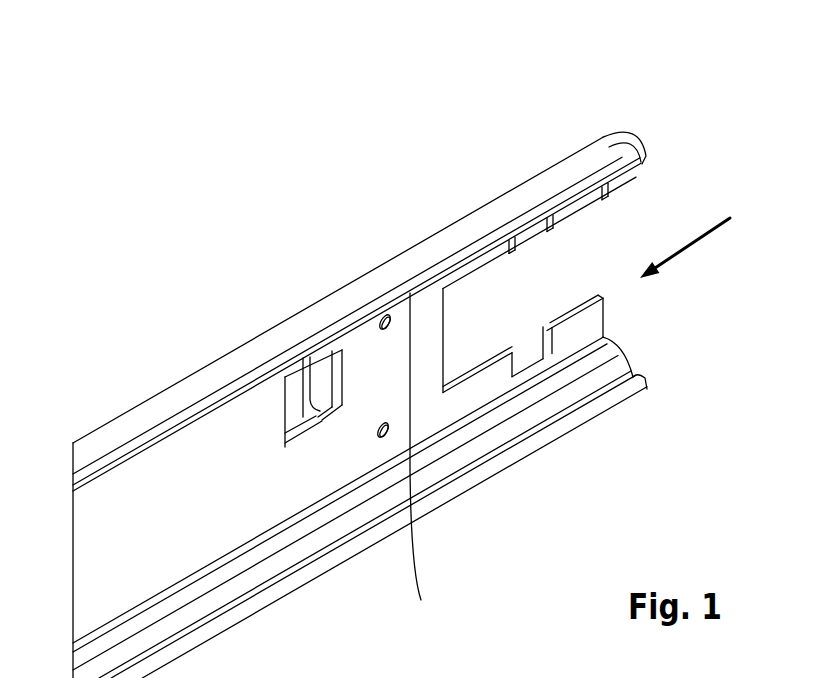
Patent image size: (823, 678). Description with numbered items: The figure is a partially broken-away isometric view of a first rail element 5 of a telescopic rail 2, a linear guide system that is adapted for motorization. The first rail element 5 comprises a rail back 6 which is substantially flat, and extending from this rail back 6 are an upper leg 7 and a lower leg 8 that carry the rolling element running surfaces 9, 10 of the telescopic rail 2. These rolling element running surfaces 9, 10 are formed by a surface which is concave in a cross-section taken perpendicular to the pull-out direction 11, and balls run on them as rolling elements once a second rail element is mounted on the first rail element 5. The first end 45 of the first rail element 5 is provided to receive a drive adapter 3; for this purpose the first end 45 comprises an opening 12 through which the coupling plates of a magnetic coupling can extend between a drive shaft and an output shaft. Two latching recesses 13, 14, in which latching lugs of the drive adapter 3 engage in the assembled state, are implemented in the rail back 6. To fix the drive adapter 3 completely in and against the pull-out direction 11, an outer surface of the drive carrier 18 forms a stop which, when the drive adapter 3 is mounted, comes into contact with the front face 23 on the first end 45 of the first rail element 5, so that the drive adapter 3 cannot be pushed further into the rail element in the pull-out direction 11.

The telescopic rail 2 is at (664, 225).
The drive adapter 3 is at (711, 664).
The first rail element 5 is at (178, 483).
The rail back 6 is at (299, 490).
The upper leg 7 is at (345, 303).
The lower leg 8 is at (477, 478).
The rolling element running surface 9 is at (145, 643).
The rolling element running surface 10 is at (421, 600).
The pull-out direction 11 is at (688, 247).
The opening 12 is at (524, 307).
The latching recess 13 is at (533, 361).
The latching recess 14 is at (522, 226).
The drive carrier 18 is at (465, 664).
The front face 23 is at (642, 117).
The first end 45 is at (548, 121).